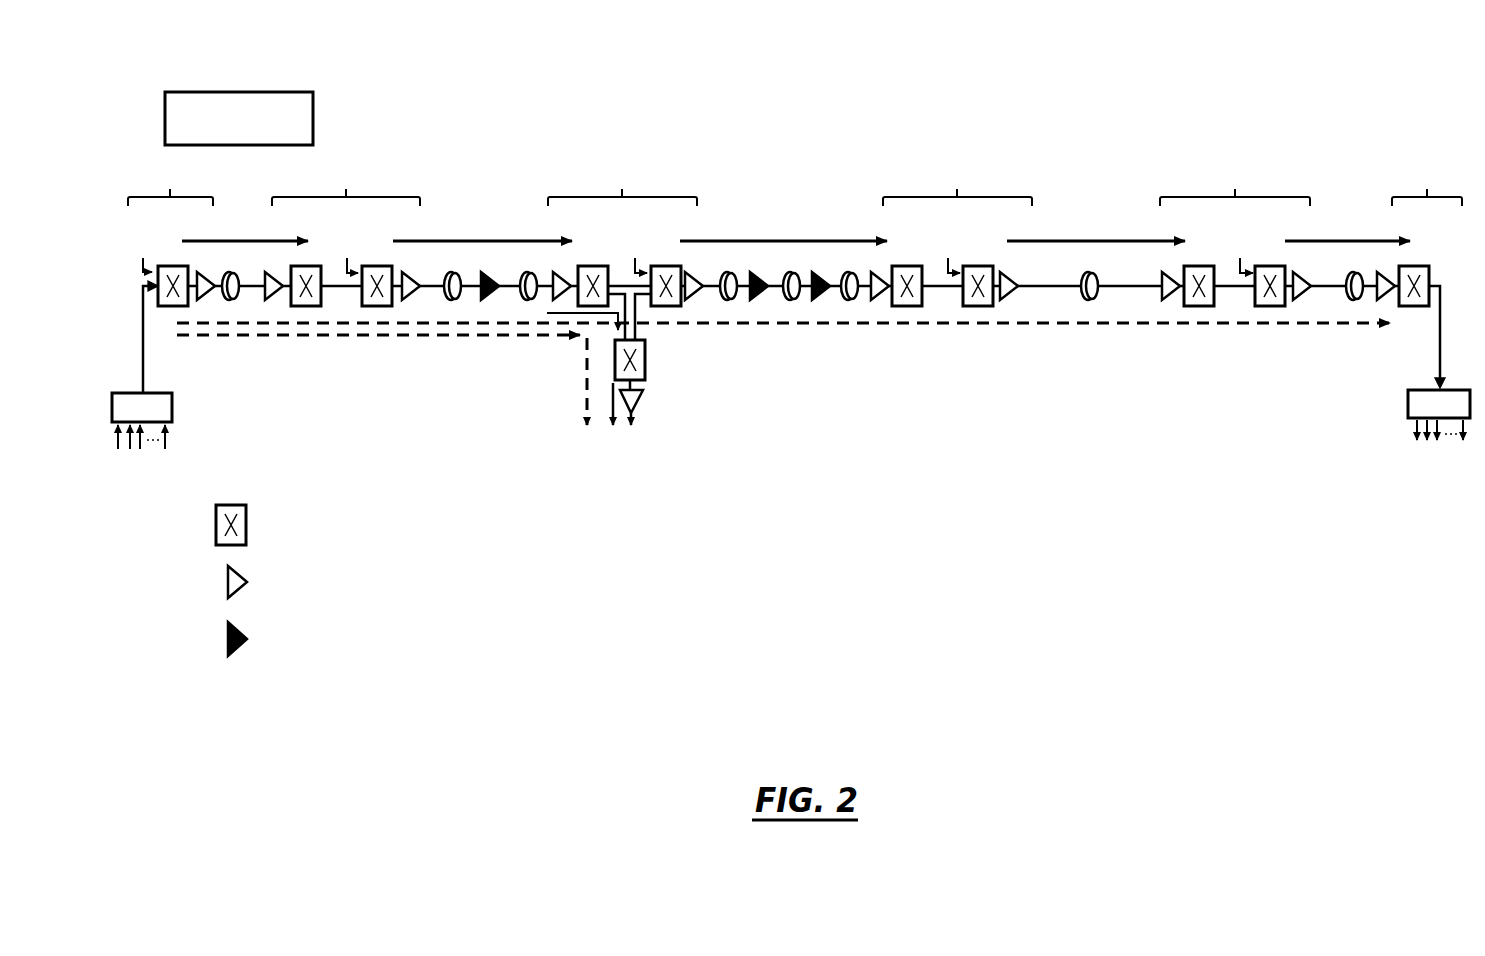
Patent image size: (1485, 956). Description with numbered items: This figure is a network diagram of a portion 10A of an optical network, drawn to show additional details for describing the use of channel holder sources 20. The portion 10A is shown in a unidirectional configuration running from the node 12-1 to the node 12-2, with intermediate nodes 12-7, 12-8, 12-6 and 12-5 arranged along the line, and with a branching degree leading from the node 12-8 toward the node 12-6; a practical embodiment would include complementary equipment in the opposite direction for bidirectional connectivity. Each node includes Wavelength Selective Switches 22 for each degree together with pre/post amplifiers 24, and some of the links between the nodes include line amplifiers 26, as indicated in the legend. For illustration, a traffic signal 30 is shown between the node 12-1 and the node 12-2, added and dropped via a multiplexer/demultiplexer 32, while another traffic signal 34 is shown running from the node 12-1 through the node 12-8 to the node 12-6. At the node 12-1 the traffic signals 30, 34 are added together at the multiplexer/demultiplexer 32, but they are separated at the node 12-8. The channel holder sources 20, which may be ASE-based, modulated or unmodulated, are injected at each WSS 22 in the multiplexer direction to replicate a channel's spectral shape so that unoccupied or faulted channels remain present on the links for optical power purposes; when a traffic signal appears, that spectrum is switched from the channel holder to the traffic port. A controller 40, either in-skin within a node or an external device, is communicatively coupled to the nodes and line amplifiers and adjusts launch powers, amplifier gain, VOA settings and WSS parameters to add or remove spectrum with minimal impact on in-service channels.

The portion of the optical network 10A is at (894, 106).
The controller 40 is at (279, 92).
The channel holder sources 20 is at (132, 256).
The multiplexer/demultiplexer 32 is at (117, 428).
The traffic signal 30 is at (822, 324).
The traffic signal 34 is at (512, 337).
The Wavelength Selective Switch 22 is at (272, 525).
The pre/post amplifier 24 is at (359, 582).
The line amplifier 26 is at (333, 639).
The node 12-1 is at (170, 184).
The node 12-2 is at (1427, 183).
The node 12-5 is at (1235, 184).
The node 12-6 is at (957, 184).
The node 12-7 is at (346, 184).
The node 12-8 is at (622, 184).